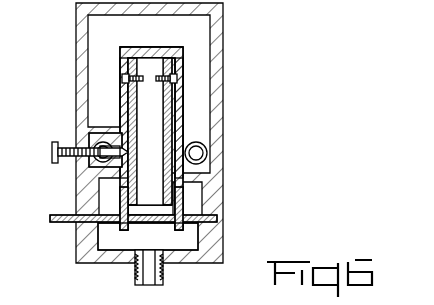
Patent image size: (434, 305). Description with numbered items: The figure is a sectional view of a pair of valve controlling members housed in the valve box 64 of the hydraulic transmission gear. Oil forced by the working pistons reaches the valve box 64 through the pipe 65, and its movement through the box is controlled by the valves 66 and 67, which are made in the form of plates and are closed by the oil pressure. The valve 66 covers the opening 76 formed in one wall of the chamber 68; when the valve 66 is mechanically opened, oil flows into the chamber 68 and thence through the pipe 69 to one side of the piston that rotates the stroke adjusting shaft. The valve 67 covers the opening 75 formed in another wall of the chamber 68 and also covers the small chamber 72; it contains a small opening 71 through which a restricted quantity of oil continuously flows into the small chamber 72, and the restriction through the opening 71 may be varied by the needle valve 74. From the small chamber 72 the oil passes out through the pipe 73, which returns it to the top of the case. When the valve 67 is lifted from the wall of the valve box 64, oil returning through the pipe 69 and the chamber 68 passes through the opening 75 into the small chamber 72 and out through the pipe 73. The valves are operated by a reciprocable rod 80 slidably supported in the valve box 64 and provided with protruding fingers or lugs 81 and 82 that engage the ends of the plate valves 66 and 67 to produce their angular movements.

The valve box 64 is at (214, 215).
The pipe 65 is at (158, 277).
The valve 66 is at (170, 120).
The valve 67 is at (138, 110).
The chamber 68 is at (198, 80).
The pipe 69 is at (206, 149).
The opening 71 is at (132, 152).
The small chamber 72 is at (75, 162).
The pipe 73 is at (83, 137).
The needle valve 74 is at (72, 145).
The opening 75 is at (125, 112).
The opening 76 is at (182, 138).
The reciprocable rod 80 is at (148, 236).
The finger or lug 81 is at (100, 197).
The finger or lug 82 is at (178, 196).